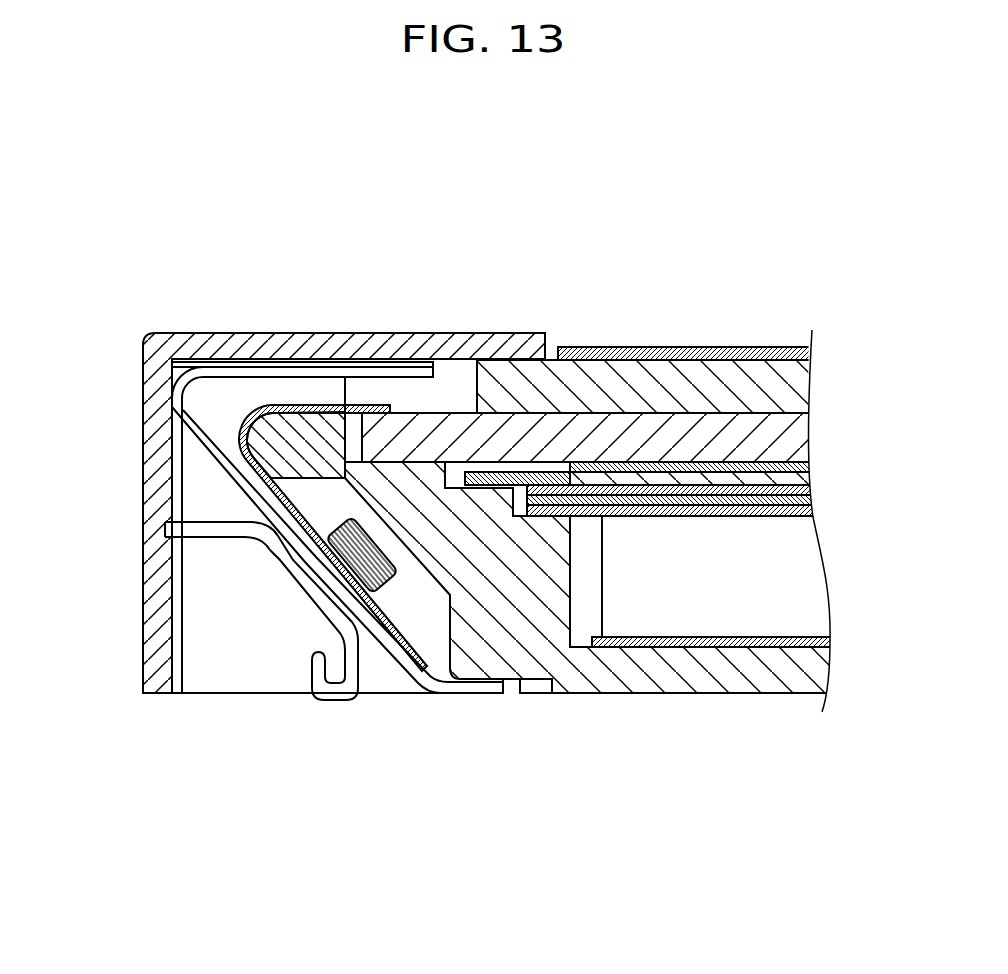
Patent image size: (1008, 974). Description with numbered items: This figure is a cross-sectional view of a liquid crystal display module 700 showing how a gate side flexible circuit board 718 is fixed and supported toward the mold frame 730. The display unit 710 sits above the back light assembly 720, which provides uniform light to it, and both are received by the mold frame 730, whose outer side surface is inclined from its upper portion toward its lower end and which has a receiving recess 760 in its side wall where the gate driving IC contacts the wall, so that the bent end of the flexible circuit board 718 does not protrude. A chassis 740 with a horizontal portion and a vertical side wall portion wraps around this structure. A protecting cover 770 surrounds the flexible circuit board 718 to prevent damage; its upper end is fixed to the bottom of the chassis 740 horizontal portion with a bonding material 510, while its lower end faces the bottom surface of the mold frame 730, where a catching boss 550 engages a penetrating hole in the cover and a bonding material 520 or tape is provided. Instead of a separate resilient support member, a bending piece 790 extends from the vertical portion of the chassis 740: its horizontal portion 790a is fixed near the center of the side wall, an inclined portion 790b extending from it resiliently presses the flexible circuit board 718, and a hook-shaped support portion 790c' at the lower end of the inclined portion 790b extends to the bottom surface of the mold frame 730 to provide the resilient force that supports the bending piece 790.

The liquid crystal display module 700 is at (740, 293).
The display unit 710 is at (667, 333).
The gate side flexible circuit board 718 is at (300, 403).
The back light assembly 720 is at (845, 463).
The mold frame 730 is at (670, 703).
The chassis 740 is at (456, 300).
The bonding material 510 is at (347, 362).
The bonding material 520 is at (533, 697).
The catching boss 550 is at (507, 695).
The receiving recess 760 is at (273, 553).
The protecting cover 770 is at (327, 512).
The bending piece 790 is at (250, 577).
The horizontal portion 790a is at (207, 522).
The inclined portion 790b is at (270, 557).
The support portion 790c' is at (343, 755).